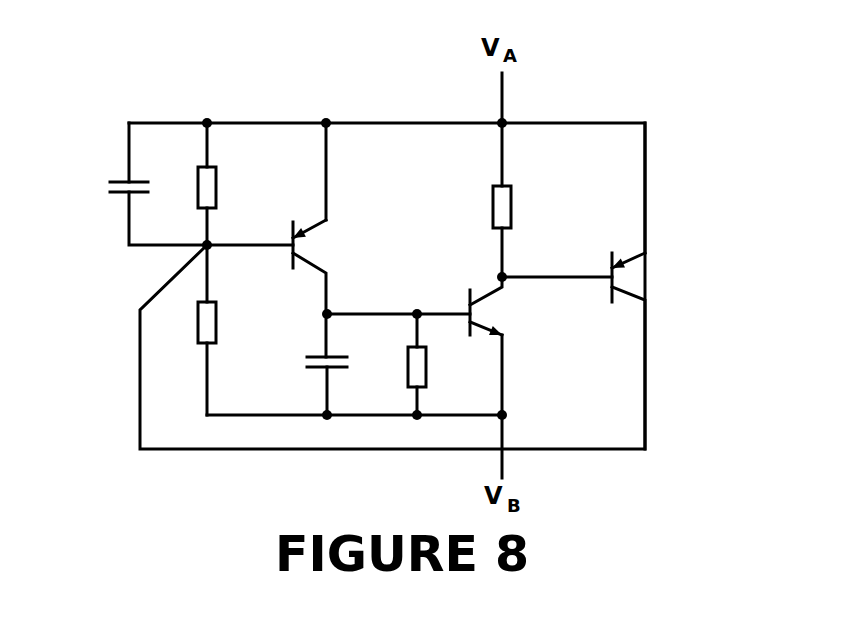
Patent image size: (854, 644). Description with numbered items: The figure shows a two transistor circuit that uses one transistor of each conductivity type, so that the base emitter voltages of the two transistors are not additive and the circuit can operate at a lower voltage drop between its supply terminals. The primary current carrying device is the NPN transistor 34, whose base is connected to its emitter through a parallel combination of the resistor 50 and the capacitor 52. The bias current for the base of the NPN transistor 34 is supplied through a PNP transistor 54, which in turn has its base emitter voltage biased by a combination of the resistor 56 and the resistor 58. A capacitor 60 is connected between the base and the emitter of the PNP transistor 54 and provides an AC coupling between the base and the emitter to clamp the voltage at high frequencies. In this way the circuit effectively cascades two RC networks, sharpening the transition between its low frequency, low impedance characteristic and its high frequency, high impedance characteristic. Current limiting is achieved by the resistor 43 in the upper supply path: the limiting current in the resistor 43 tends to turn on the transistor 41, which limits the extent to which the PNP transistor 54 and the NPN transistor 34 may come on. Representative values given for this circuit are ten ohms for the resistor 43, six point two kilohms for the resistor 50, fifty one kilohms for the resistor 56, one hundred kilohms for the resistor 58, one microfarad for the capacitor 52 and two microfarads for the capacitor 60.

The capacitor 60 is at (113, 182).
The resistor 56 is at (198, 183).
The resistor 58 is at (217, 320).
The PNP transistor 54 is at (320, 246).
The capacitor 52 is at (315, 355).
The resistor 50 is at (408, 365).
The NPN transistor 34 is at (494, 312).
The resistor 43 is at (494, 200).
The transistor 41 is at (634, 271).